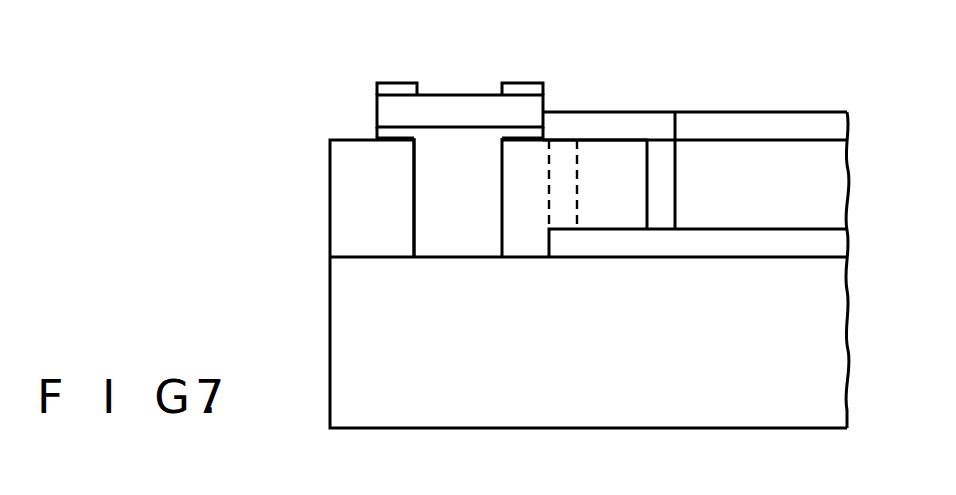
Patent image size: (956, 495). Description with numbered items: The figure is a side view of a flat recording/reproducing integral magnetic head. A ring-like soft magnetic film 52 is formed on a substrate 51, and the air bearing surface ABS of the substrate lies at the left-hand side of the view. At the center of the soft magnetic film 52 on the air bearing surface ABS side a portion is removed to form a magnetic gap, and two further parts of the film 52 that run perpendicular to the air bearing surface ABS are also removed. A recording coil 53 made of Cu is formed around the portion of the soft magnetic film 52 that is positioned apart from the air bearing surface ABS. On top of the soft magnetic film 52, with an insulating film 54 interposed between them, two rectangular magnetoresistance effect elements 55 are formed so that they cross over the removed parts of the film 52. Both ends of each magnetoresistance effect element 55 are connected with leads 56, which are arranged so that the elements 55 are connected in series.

The substrate 51 is at (348, 304).
The soft magnetic film 52 is at (347, 209).
The recording coil 53 is at (740, 125).
The insulating film 54 is at (377, 133).
The magnetoresistance effect element 55 is at (460, 107).
The lead 56 is at (390, 86).
The air bearing surface ABS is at (329, 343).